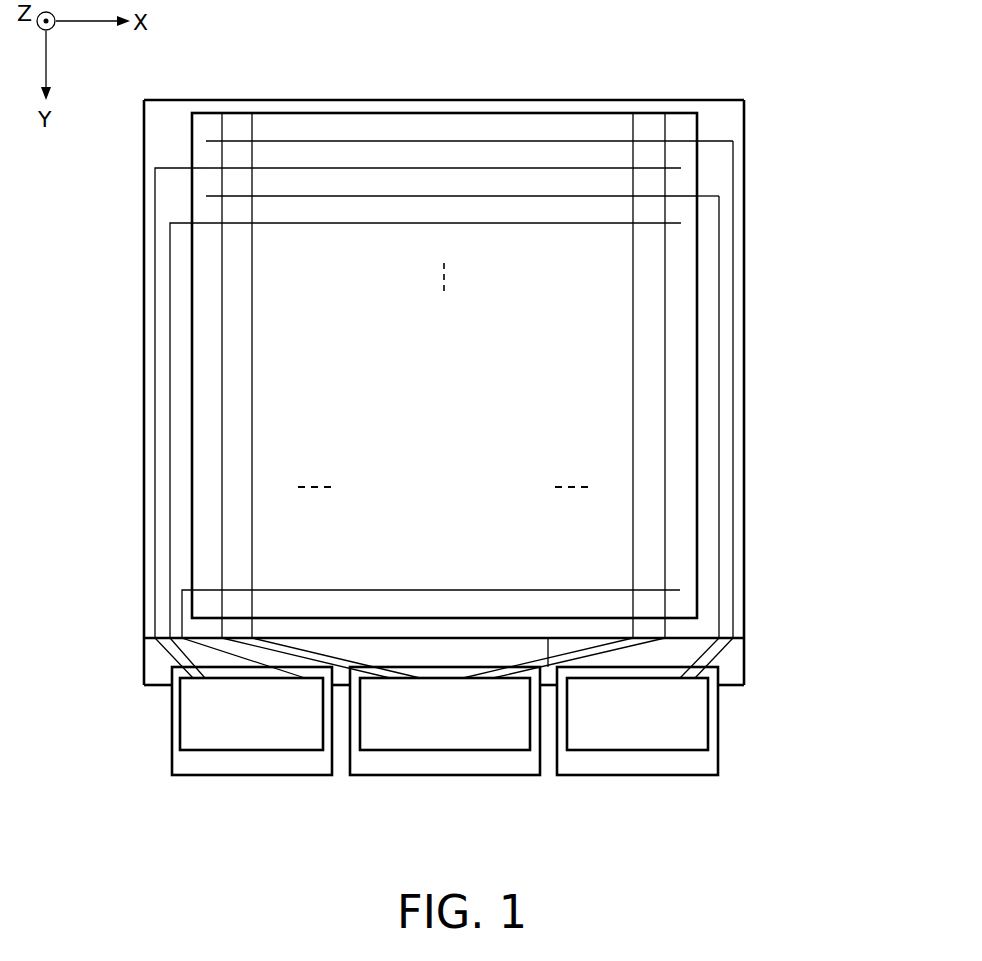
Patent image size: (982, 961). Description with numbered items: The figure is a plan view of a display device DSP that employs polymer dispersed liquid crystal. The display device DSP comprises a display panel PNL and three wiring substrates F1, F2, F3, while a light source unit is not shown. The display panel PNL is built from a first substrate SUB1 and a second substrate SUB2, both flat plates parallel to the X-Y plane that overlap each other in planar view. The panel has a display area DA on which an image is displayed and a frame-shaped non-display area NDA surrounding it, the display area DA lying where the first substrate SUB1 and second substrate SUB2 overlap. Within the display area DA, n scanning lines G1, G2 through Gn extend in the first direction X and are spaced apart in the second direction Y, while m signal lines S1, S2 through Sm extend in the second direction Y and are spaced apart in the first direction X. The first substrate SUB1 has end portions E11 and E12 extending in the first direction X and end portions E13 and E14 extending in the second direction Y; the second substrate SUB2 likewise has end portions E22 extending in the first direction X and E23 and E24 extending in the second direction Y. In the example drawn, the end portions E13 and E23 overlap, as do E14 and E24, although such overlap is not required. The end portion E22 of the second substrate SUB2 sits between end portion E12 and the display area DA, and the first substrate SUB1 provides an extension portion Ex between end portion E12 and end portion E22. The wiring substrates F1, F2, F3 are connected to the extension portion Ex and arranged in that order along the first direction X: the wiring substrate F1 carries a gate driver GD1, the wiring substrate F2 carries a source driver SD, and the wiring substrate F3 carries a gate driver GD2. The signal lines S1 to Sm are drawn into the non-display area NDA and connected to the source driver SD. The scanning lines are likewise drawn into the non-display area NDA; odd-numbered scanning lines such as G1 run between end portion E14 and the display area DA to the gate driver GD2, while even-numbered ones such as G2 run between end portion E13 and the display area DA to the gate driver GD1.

The display device DSP is at (805, 110).
The display panel PNL is at (745, 99).
The first substrate SUB1 is at (148, 662).
The second substrate SUB2 is at (147, 607).
The display area DA is at (700, 320).
The non-display area NDA is at (708, 602).
The extension portion Ex is at (740, 660).
The signal line S1 is at (222, 128).
The signal line S2 is at (253, 128).
The signal line Sm is at (666, 130).
The scanning line G1 is at (328, 141).
The scanning line G2 is at (375, 168).
The scanning line Gn is at (412, 590).
The end portion E11 is at (572, 99).
The end portion E12 is at (340, 687).
The end portion E13 is at (143, 405).
The end portion E14 is at (745, 387).
The end portion E22 is at (548, 667).
The end portion E23 is at (188, 450).
The end portion E24 is at (699, 437).
The wiring substrate F1 is at (172, 707).
The wiring substrate F2 is at (478, 775).
The wiring substrate F3 is at (720, 698).
The gate driver GD1 is at (182, 742).
The gate driver GD2 is at (708, 732).
The source driver SD is at (407, 750).